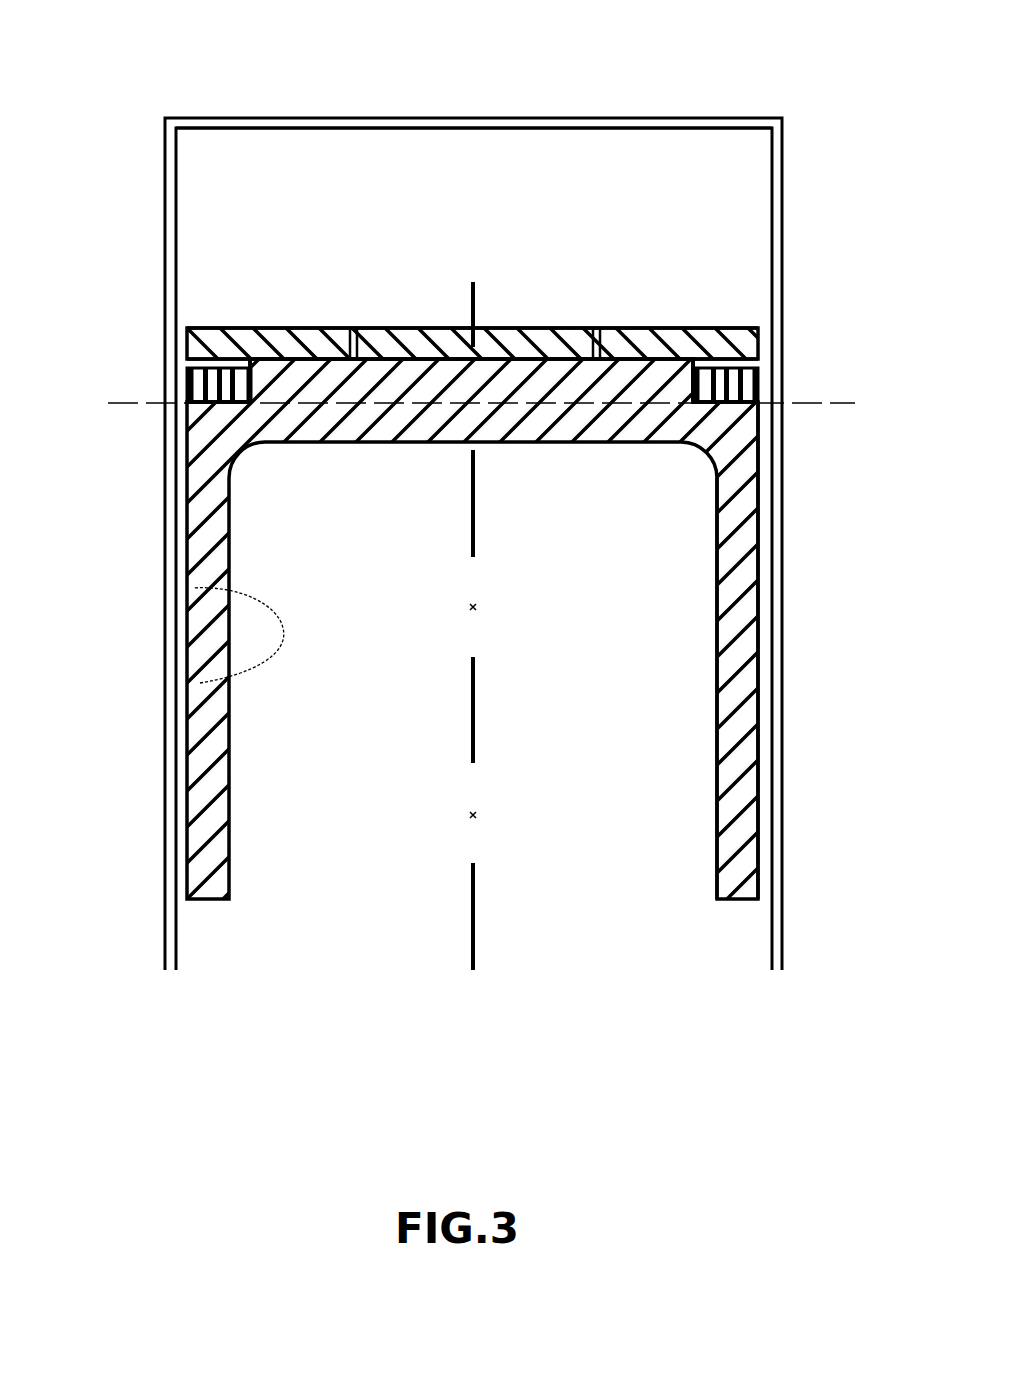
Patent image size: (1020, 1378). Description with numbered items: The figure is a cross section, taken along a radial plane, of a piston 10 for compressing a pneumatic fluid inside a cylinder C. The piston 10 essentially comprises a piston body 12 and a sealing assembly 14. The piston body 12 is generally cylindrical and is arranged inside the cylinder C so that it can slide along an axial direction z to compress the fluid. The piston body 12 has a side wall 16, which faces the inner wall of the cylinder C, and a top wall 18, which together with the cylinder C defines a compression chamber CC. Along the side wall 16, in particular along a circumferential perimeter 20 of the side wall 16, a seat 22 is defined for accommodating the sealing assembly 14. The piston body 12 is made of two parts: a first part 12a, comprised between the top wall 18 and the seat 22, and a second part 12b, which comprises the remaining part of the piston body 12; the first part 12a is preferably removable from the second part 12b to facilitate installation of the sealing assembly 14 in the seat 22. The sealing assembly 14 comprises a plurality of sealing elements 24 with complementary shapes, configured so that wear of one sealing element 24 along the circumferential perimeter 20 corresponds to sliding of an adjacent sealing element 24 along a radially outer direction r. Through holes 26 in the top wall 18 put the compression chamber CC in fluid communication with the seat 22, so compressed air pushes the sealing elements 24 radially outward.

The piston 10 is at (552, 544).
The piston body 12 is at (480, 636).
The first part 12a is at (545, 185).
The second part 12b is at (740, 630).
The sealing assembly 14 is at (178, 382).
The side wall 16 is at (200, 683).
The top wall 18 is at (287, 330).
The circumferential perimeter 20 is at (187, 403).
The seat 22 is at (268, 376).
The sealing element 24 is at (212, 408).
The through hole 26 is at (352, 330).
The cylinder C is at (772, 200).
The compression chamber CC is at (565, 187).
The radially outer direction r is at (818, 402).
The axial direction z is at (477, 930).